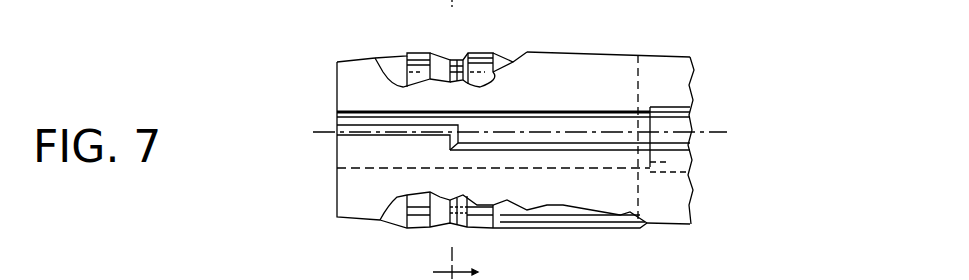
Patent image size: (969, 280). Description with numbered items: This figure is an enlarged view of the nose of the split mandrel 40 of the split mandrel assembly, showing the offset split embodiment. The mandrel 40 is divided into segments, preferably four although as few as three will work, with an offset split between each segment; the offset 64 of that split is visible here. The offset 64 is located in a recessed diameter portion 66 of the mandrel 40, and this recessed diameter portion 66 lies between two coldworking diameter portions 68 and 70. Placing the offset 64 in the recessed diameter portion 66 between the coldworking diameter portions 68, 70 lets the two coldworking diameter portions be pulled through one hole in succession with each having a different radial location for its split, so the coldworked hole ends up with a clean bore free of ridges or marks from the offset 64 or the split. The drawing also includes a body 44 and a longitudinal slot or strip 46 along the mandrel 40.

The mandrel 40 is at (383, 237).
The cylindrical body 44 is at (622, 58).
The longitudinal slot / strip 46 is at (333, 122).
The offset 64 is at (458, 145).
The recessed diameter portion 66 is at (450, 55).
The coldworking diameter portion 68 is at (417, 52).
The coldworking diameter portion 70 is at (480, 52).